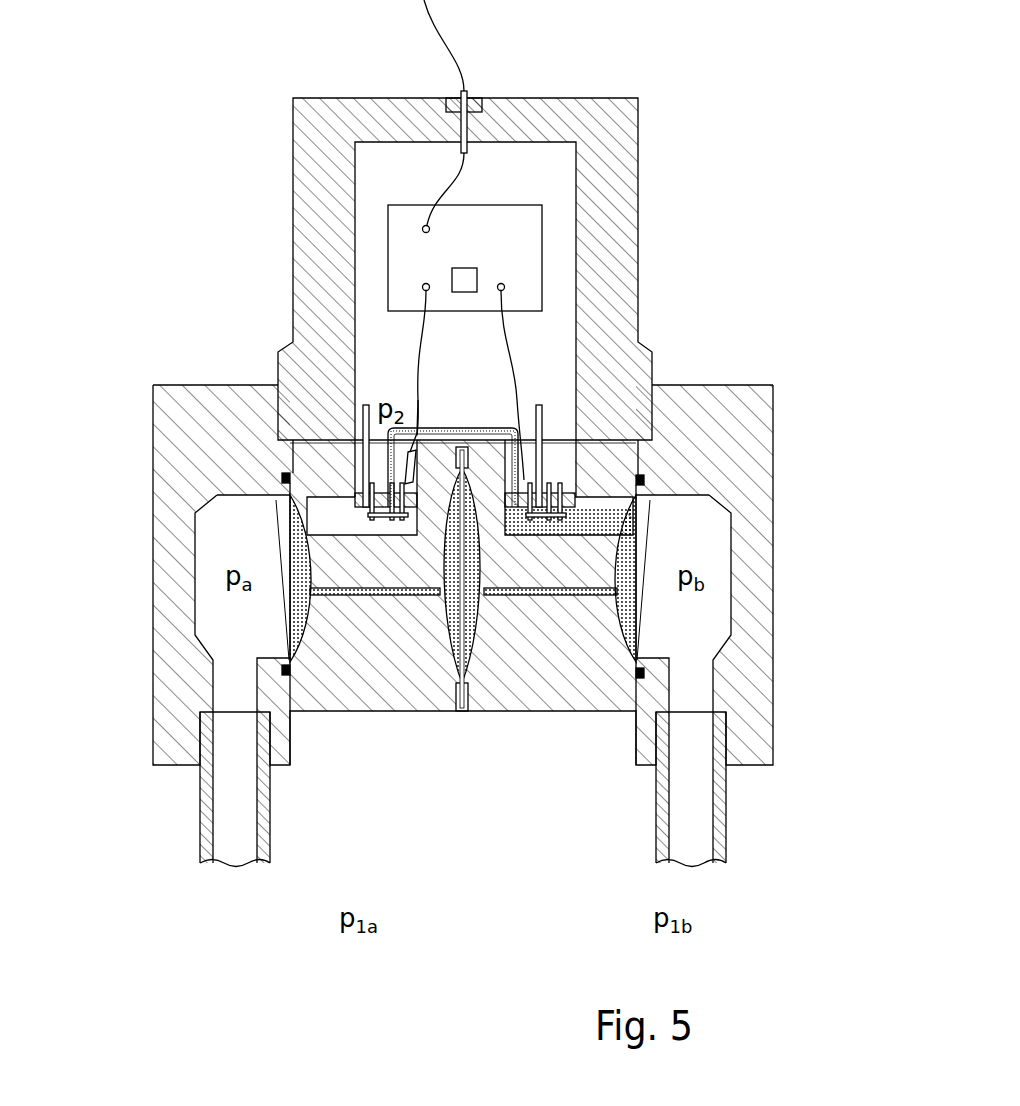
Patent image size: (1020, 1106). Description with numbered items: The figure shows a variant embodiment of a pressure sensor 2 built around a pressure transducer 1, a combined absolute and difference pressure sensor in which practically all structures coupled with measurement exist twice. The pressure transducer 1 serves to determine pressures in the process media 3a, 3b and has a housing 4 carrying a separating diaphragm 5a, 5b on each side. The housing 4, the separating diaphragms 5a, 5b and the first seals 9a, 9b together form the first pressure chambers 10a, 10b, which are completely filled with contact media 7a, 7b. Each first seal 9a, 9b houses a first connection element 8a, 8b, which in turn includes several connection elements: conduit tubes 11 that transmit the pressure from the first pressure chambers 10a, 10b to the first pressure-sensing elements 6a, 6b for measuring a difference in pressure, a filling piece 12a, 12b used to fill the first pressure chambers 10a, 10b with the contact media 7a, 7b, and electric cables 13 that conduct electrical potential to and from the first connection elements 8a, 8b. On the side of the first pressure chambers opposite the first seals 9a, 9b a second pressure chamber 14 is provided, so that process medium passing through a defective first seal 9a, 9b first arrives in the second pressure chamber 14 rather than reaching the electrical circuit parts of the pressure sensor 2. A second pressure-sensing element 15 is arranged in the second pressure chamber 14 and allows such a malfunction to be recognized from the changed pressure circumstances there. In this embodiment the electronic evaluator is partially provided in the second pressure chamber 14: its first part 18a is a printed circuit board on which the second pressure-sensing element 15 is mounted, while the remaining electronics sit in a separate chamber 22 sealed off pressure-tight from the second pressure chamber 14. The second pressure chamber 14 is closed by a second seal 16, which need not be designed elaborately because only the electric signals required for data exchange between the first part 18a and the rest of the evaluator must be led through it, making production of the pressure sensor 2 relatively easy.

The pressure transducer 1 is at (415, 805).
The pressure sensor 2 is at (165, 828).
The process media 3a is at (225, 607).
The process media 3b is at (700, 606).
The housing 4 is at (525, 690).
The separating diaphragm 5a is at (287, 618).
The separating diaphragm 5b is at (640, 621).
The first pressure-sensing element 6a is at (385, 517).
The first pressure-sensing element 6b is at (538, 510).
The contact media 7a is at (310, 625).
The contact media 7b is at (613, 647).
The first connection element 8a is at (368, 478).
The first connection element 8b is at (556, 474).
The first seal 9a is at (357, 480).
The first seal 9b is at (577, 470).
The first pressure chamber 10a is at (360, 714).
The first pressure chamber 10b is at (568, 714).
The conduit tubes 11 is at (357, 440).
The filling piece 12a is at (358, 416).
The filling piece 12b is at (563, 415).
The electric cables 13 is at (420, 370).
The second pressure chamber 14 is at (542, 427).
The second pressure-sensing element 15 is at (477, 278).
The second seal 16 is at (450, 98).
The first part of the evaluator 18a is at (395, 250).
The separate chamber 22 is at (527, 173).